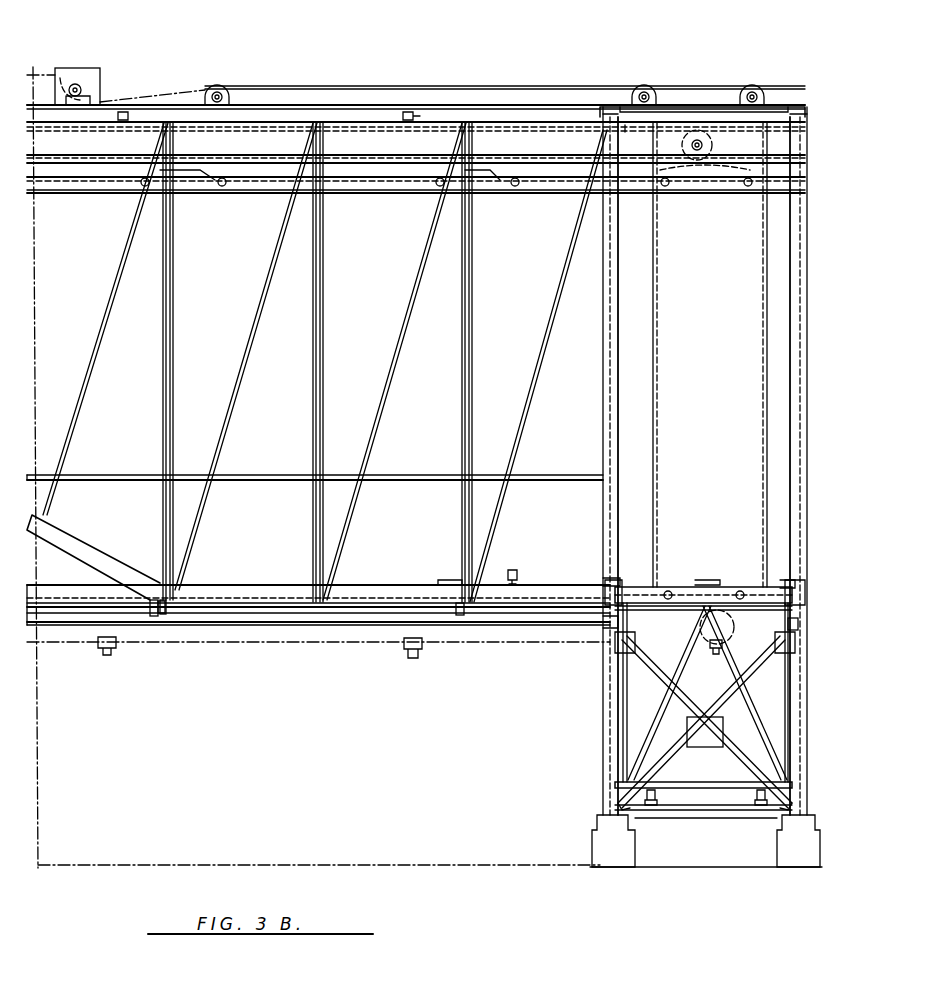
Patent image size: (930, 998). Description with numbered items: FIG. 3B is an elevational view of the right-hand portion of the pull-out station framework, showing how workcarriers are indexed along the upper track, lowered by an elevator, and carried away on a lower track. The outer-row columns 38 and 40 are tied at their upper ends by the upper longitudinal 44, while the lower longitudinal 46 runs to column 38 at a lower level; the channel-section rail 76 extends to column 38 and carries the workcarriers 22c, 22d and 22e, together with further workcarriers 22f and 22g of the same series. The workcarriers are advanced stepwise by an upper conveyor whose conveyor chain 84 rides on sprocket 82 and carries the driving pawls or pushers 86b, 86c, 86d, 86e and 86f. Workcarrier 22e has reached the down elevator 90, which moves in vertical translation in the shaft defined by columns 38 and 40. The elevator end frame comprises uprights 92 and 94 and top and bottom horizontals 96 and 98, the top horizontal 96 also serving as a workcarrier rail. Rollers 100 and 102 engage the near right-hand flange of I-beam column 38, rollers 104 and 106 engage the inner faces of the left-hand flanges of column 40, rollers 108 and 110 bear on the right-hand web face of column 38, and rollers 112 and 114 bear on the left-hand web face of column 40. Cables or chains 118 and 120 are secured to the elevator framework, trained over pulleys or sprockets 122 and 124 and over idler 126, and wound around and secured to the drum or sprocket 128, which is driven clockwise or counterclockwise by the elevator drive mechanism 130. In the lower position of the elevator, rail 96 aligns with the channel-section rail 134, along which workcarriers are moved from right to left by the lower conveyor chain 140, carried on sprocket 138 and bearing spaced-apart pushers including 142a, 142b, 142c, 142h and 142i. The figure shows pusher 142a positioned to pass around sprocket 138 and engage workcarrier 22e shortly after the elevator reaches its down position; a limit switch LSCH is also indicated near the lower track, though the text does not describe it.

The workcarrier 22c is at (198, 190).
The workcarrier 22d is at (470, 165).
The workcarrier 22e is at (716, 180).
The workcarrier 22f is at (440, 582).
The workcarrier 22g is at (135, 615).
The column 38 is at (612, 745).
The column 40 is at (797, 690).
The upper longitudinal 44 is at (348, 105).
The lower longitudinal 46 is at (62, 628).
The channel-section rail 76 is at (60, 185).
The sprocket 82 is at (712, 143).
The conveyor chain 84 is at (260, 165).
The pusher 86b is at (180, 158).
The pusher 86c is at (455, 160).
The pusher 86d is at (700, 128).
The pusher 86e is at (430, 108).
The pusher 86f is at (148, 110).
The down elevator 90 is at (618, 700).
The upright 92 is at (612, 723).
The upright 94 is at (780, 672).
The top horizontal 96 is at (637, 185).
The bottom horizontal 98 is at (672, 790).
The roller 100 is at (610, 622).
The roller 102 is at (612, 770).
The roller 104 is at (790, 625).
The roller 106 is at (790, 765).
The roller 108 is at (610, 580).
The roller 110 is at (612, 800).
The roller 112 is at (790, 580).
The roller 114 is at (766, 814).
The cable or chain 118 is at (655, 445).
The cable or chain 120 is at (765, 452).
The pulley or sprocket 122 is at (647, 86).
The pulley or sprocket 124 is at (752, 86).
The idler 126 is at (224, 86).
The drum or sprocket 128 is at (100, 95).
The elevator drive mechanism 130 is at (86, 68).
The channel-section rail 134 is at (528, 596).
The sprocket 138 is at (697, 630).
The conveyor chain 140 is at (447, 645).
The pusher 142a is at (712, 655).
The pusher 142b is at (440, 620).
The pusher 142c is at (165, 625).
The pusher 142h is at (105, 656).
The pusher 142i is at (410, 660).
The limit switch LSCH is at (513, 568).